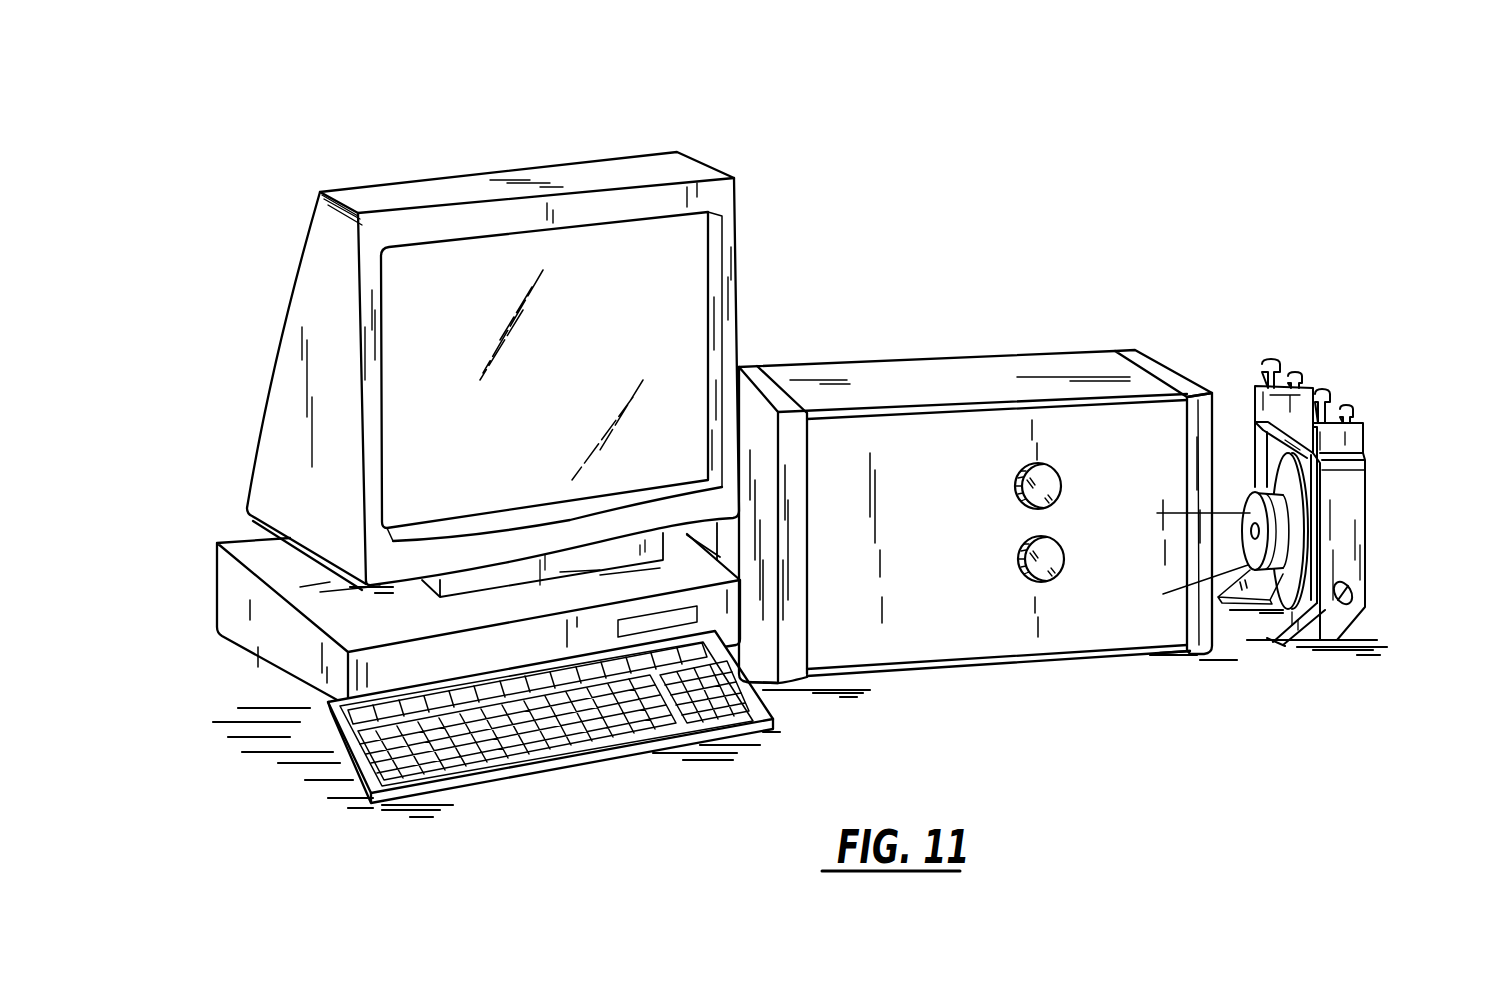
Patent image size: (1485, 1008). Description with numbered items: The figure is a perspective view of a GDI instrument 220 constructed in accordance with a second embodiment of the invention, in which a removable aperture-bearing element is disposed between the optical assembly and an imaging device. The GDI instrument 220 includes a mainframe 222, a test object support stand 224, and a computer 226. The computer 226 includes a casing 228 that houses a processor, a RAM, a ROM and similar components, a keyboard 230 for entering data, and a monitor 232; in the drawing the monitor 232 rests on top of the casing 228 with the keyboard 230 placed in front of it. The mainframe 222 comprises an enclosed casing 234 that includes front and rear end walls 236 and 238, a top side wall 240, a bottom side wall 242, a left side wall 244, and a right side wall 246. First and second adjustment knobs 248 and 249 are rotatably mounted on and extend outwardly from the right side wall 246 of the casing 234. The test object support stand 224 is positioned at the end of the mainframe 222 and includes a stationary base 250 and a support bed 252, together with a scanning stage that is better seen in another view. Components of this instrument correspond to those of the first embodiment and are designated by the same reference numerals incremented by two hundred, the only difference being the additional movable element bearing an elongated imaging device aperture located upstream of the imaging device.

The GDI instrument 220 is at (1255, 125).
The mainframe 222 is at (999, 517).
The test object support stand 224 is at (1358, 502).
The computer 226 is at (493, 343).
The computer base unit 228 is at (232, 580).
The keyboard 230 is at (537, 768).
The monitor 232 is at (361, 191).
The enclosed casing 234 is at (999, 527).
The front end wall 236 is at (1212, 410).
The rear end wall 238 is at (762, 652).
The top side wall 240 is at (1060, 372).
The bottom side wall 242 is at (940, 670).
The left side wall 244 is at (813, 336).
The right side wall 246 is at (1080, 627).
The first adjustment knob 248 is at (1056, 568).
The second adjustment knob 249 is at (1060, 497).
The stationary base 250 is at (1367, 560).
The support bed 252 is at (1281, 473).